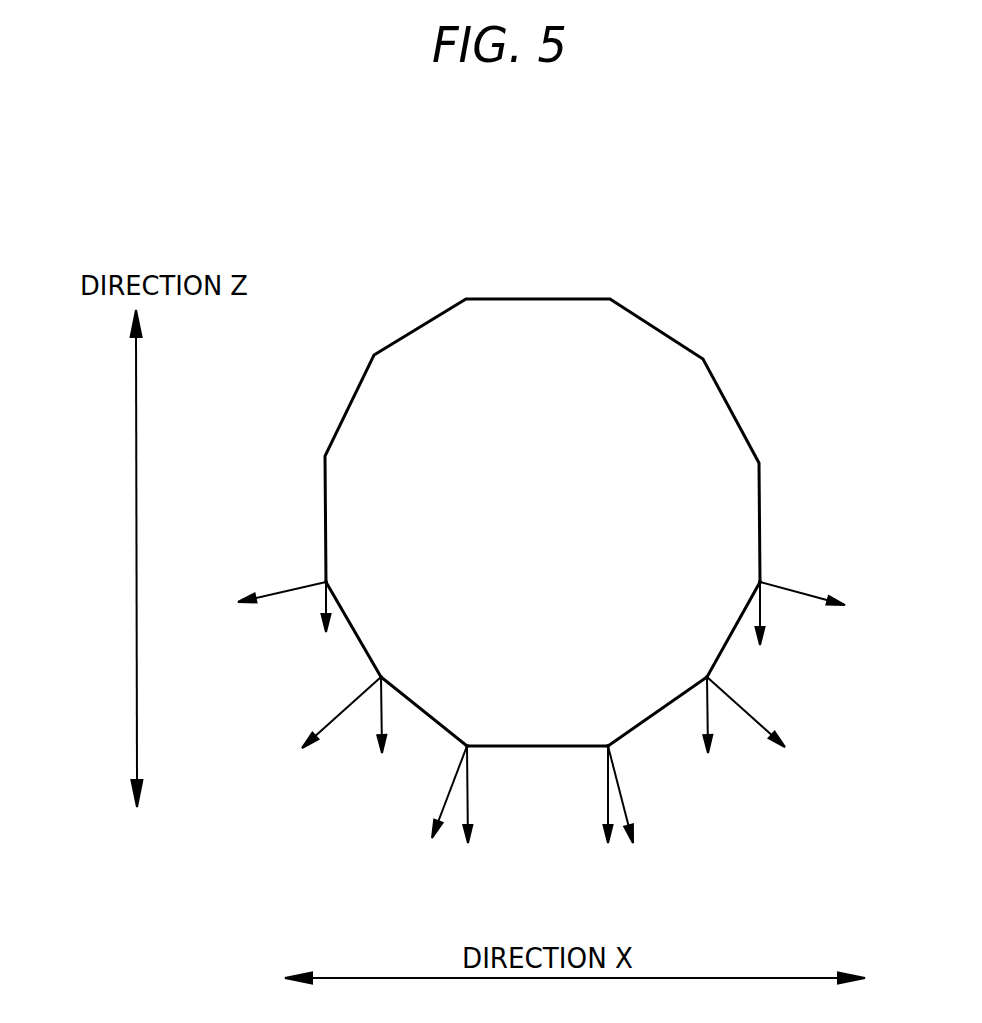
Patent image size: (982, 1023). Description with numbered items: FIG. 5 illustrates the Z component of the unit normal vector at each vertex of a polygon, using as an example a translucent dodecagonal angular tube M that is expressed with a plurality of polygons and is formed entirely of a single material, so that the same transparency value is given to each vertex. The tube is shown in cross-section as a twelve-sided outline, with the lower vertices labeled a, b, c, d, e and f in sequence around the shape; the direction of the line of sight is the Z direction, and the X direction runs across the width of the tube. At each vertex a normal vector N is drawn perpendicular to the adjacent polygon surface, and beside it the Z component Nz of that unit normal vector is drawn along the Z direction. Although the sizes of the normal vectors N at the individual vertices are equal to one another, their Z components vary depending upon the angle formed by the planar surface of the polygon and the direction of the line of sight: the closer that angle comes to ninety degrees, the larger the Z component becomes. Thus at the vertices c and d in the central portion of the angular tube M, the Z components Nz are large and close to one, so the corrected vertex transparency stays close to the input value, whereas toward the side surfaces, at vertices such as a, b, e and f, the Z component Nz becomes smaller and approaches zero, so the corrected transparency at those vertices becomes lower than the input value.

The angular tube M is at (643, 347).
The vertex a is at (337, 572).
The vertex b is at (387, 665).
The vertex c is at (472, 729).
The vertex d is at (604, 729).
The vertex e is at (697, 661).
The vertex f is at (748, 575).
The normal vector N is at (526, 722).
The Z component of the unit normal vector Nz is at (534, 732).